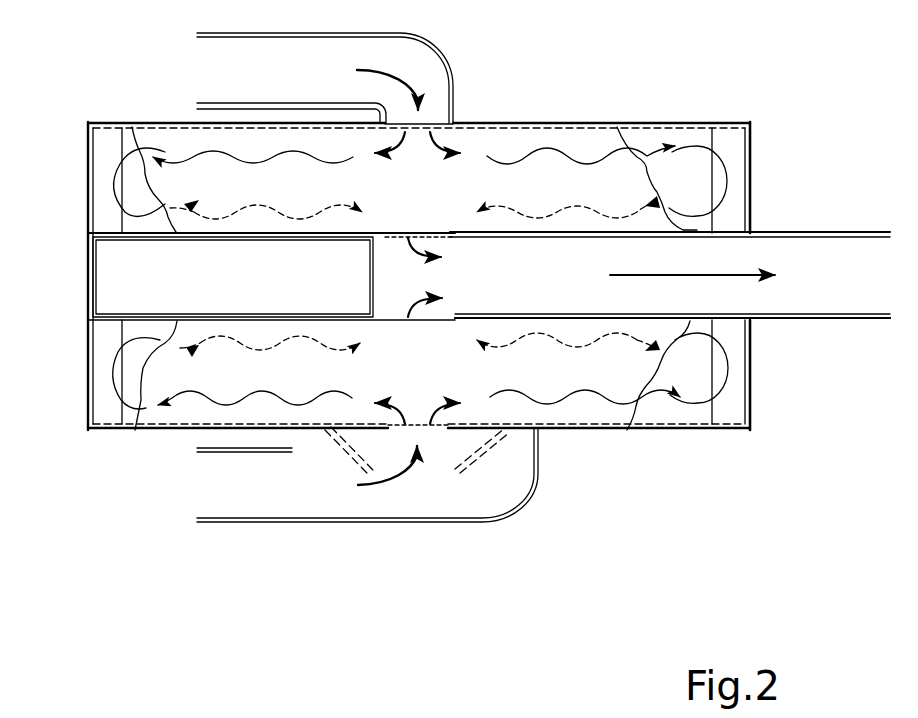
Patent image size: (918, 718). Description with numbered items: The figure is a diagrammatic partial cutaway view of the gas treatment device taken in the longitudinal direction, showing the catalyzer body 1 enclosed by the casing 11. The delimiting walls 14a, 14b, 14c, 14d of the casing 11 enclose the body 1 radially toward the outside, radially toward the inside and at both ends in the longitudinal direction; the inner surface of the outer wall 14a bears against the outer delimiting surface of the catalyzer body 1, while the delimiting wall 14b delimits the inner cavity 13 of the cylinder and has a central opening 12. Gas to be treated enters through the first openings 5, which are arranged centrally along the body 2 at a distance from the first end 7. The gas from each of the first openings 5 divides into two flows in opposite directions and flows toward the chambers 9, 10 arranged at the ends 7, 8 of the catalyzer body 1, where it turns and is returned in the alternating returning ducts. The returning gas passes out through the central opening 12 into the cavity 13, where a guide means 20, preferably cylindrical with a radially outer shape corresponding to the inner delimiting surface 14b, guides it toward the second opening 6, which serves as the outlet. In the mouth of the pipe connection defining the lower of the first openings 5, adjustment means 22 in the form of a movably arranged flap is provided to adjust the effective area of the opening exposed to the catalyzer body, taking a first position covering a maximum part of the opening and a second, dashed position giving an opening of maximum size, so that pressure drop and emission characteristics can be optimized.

The catalyzer body 1 is at (667, 128).
The body 2 is at (695, 437).
The first openings 5 is at (442, 106).
The second opening 6 is at (755, 298).
The first end 7 is at (116, 140).
The end 8 is at (714, 136).
The chamber 9 is at (108, 150).
The chamber 10 is at (735, 155).
The casing 11 is at (640, 435).
The central opening 12 is at (450, 239).
The cavity 13 is at (578, 317).
The outer wall 14a is at (555, 123).
The delimiting wall 14b is at (519, 239).
The delimiting wall 14c is at (88, 205).
The delimiting wall 14d is at (748, 203).
The guide means 20 is at (116, 282).
The adjustment means 22 is at (327, 454).